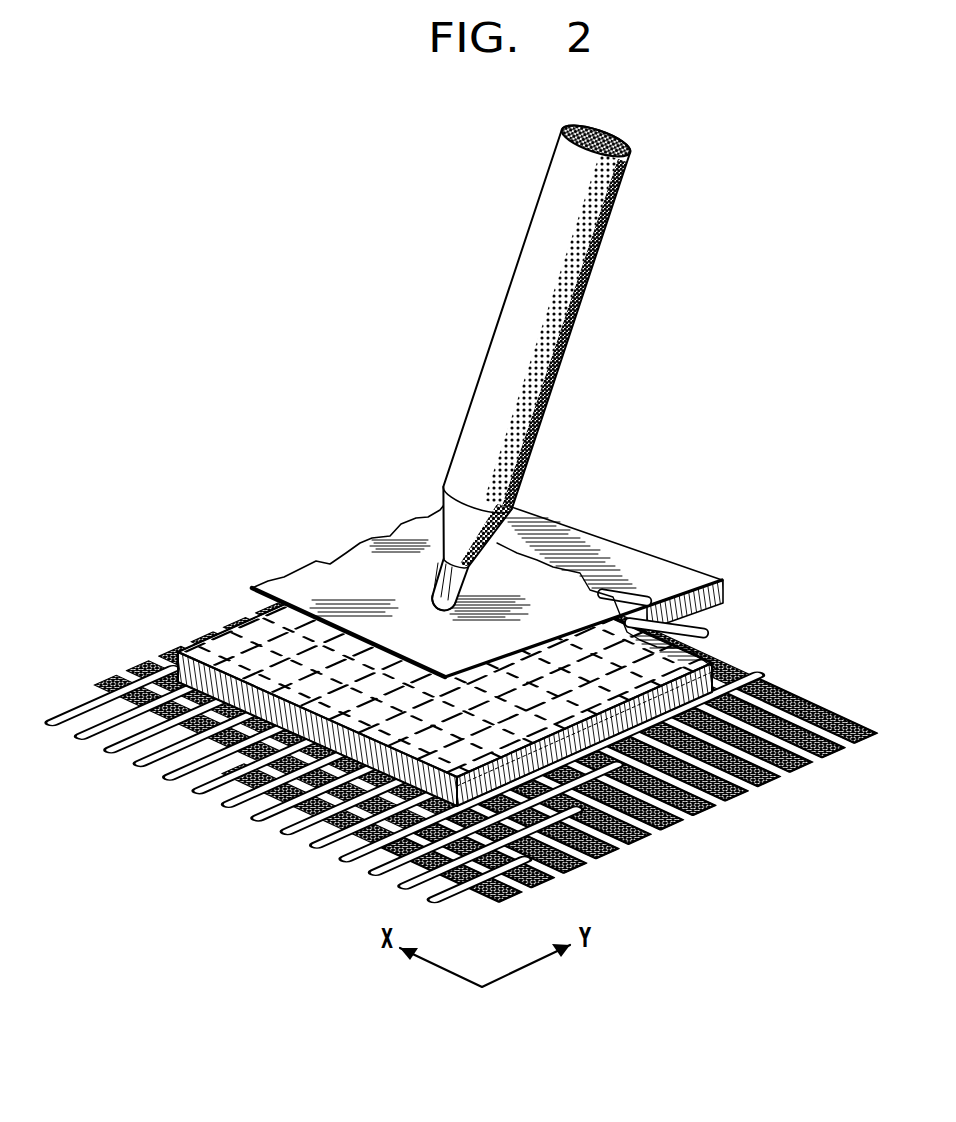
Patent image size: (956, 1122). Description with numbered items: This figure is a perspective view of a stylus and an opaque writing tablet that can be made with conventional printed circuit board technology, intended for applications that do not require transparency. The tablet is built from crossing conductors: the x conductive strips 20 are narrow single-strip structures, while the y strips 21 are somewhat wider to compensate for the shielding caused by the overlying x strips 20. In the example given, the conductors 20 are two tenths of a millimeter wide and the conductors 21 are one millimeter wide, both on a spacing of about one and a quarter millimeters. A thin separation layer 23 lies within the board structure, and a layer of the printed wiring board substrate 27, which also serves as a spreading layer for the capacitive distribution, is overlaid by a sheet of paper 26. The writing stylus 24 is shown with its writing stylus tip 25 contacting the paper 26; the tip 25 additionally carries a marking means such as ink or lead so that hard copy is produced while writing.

The x conductive strips 20 is at (762, 676).
The y strips 21 is at (200, 622).
The separation layer 23 is at (727, 690).
The stylus 24 is at (480, 410).
The writing stylus tip 25 is at (437, 592).
The sheet of paper 26 is at (333, 565).
The printed wiring board substrate layer 27 is at (717, 670).